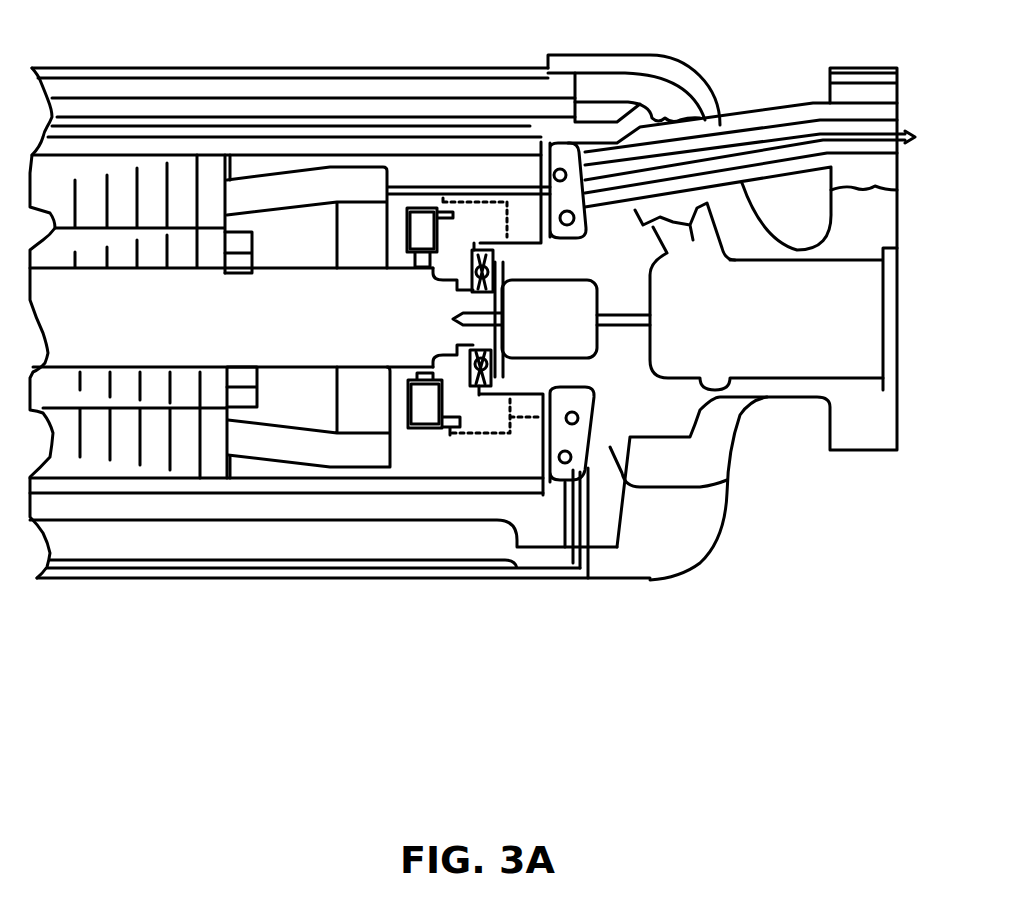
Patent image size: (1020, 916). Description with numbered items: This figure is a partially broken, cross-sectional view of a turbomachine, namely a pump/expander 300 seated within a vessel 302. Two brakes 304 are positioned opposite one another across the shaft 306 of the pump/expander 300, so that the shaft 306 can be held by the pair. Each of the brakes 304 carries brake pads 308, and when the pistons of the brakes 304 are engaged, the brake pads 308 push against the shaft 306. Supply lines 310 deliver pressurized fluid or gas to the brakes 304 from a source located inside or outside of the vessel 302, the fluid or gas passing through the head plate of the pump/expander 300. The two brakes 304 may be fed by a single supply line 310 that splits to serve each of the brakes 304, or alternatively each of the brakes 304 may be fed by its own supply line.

The pump/expander 300 is at (727, 480).
The vessel 302 is at (683, 575).
The brakes 304 is at (427, 222).
The shaft 306 is at (258, 300).
The brake pads 308 is at (405, 267).
The supply lines 310 is at (512, 210).